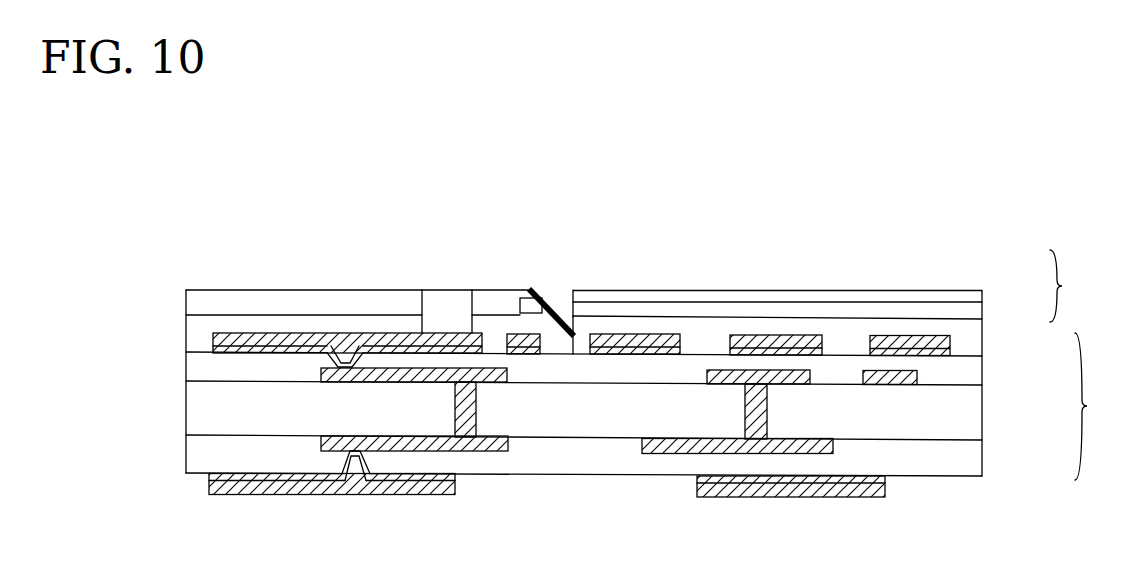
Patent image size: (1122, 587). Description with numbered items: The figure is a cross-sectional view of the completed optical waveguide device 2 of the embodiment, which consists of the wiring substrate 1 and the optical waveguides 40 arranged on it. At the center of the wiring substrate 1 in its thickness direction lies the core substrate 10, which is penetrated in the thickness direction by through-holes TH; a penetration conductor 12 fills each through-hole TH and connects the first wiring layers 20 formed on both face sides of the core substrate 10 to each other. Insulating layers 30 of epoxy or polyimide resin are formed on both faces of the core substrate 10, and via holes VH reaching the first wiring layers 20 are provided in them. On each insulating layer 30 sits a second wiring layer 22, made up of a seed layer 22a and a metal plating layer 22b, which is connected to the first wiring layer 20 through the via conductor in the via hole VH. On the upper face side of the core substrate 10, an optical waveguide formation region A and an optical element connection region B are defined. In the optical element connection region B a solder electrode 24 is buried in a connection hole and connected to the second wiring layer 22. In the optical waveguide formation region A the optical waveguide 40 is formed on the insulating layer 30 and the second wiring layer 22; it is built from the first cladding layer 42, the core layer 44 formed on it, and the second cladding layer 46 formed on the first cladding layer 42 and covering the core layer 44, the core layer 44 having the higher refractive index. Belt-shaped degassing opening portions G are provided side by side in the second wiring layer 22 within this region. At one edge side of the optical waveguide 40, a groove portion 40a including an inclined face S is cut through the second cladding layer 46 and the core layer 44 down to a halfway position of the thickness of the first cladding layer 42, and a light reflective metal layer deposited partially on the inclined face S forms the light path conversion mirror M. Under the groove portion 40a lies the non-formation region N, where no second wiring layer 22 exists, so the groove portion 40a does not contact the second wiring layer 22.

The wiring substrate 1 is at (648, 385).
The optical waveguide device 2 is at (515, 134).
The core substrate 10 is at (972, 417).
The penetration conductor 12 is at (750, 405).
The first wiring layer 20 is at (790, 380).
The second wiring layer 22 is at (557, 371).
The seed layer 22a is at (218, 346).
The metal plating layer 22b is at (230, 334).
The solder electrode 24 is at (441, 294).
The insulating layer 30 is at (972, 364).
The optical waveguide 40 is at (641, 286).
The groove portion 40a is at (553, 300).
The first cladding layer 42 is at (967, 332).
The core layer 44 is at (970, 312).
The second cladding layer 46 is at (970, 295).
The optical waveguide formation region A is at (972, 185).
The optical element connection region B is at (483, 183).
The degassing opening portion G is at (678, 345).
The light path conversion mirror M is at (540, 300).
The non-formation region N is at (587, 342).
The inclined face S is at (522, 305).
The through-hole TH is at (767, 420).
The via hole VH is at (367, 350).